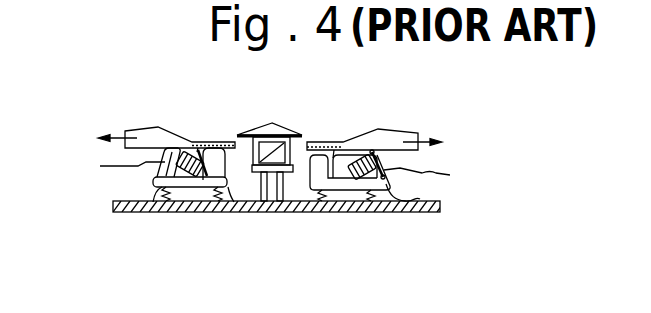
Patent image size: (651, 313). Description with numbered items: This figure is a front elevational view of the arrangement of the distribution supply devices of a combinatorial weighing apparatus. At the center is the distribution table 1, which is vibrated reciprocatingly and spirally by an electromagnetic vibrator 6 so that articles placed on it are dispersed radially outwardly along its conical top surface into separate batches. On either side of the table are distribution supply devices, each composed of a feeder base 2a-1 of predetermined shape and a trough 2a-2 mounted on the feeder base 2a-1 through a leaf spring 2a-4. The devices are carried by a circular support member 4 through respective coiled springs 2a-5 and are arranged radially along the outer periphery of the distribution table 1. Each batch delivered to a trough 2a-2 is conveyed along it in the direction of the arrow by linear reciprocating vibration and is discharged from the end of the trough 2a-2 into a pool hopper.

The distribution table 1 is at (291, 123).
The circular support member 4 is at (118, 212).
The electromagnetic vibrator 6 is at (293, 147).
The feeder base 2a-1 is at (190, 212).
The trough 2a-2 is at (149, 128).
The leaf spring 2a-4 is at (273, 172).
The coiled spring 2a-5 is at (158, 212).